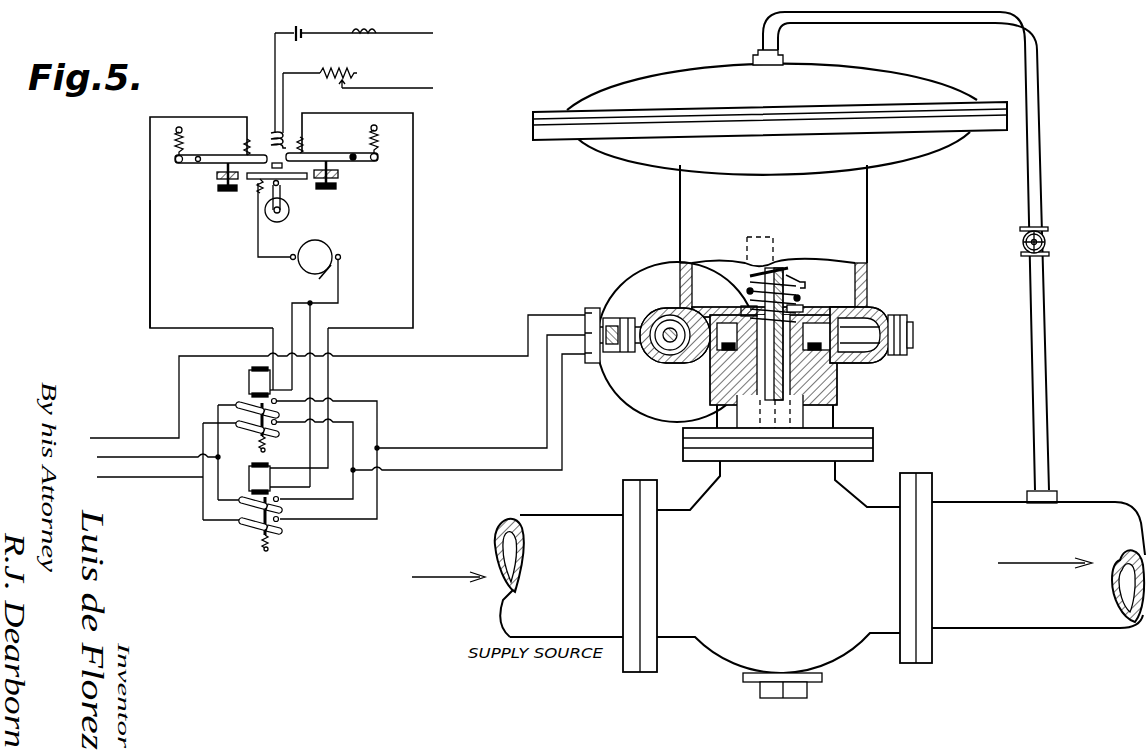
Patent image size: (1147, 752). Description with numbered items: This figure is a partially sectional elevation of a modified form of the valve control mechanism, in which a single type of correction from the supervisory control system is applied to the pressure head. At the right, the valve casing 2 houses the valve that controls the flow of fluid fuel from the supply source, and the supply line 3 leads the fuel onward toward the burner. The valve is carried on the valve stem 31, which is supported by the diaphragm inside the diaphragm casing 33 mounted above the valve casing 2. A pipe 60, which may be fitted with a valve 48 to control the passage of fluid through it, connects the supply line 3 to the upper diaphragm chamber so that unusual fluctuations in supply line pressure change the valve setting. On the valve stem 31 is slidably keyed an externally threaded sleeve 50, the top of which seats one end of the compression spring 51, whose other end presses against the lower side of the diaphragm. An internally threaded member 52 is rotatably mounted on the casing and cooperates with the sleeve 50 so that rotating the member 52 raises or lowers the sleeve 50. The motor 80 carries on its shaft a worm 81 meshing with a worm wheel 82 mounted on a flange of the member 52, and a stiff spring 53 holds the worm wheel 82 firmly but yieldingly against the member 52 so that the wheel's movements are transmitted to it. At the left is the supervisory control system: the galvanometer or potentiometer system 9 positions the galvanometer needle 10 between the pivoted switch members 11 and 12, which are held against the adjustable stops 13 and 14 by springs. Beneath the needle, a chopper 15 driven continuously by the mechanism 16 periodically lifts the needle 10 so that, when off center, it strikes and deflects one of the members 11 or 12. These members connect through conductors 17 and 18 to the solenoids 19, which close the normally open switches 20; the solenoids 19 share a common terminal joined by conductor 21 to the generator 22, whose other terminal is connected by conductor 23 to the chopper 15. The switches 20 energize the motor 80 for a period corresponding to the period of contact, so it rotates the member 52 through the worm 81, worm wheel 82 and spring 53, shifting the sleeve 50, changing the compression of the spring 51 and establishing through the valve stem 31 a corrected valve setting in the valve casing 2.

The valve casing 2 is at (728, 650).
The supply line 3 is at (1085, 615).
The galvanometer or potentiometer system 9 is at (354, 79).
The galvanometer needle 10 is at (268, 167).
The switch member 11 is at (358, 163).
The switch member 12 is at (190, 164).
The adjustable stop 13 is at (332, 188).
The adjustable stop 14 is at (222, 188).
The chopper 15 is at (293, 178).
The chopper operating mechanism 16 is at (289, 213).
The conductor 17 is at (413, 246).
The conductor 18 is at (155, 302).
The solenoid 19 is at (249, 478).
The switch 20 is at (230, 572).
The conductor 21 is at (343, 301).
The generator 22 is at (322, 249).
The conductor 23 is at (270, 262).
The valve stem 31 is at (773, 268).
The diaphragm casing 33 is at (900, 90).
The valve 48 is at (1042, 234).
The sleeve 50 is at (738, 311).
The compression spring 51 is at (803, 282).
The member 52 is at (803, 304).
The spring 53 is at (727, 347).
The pipe 60 is at (1044, 312).
The motor 80 is at (635, 393).
The worm 81 is at (666, 318).
The worm wheel 82 is at (688, 348).